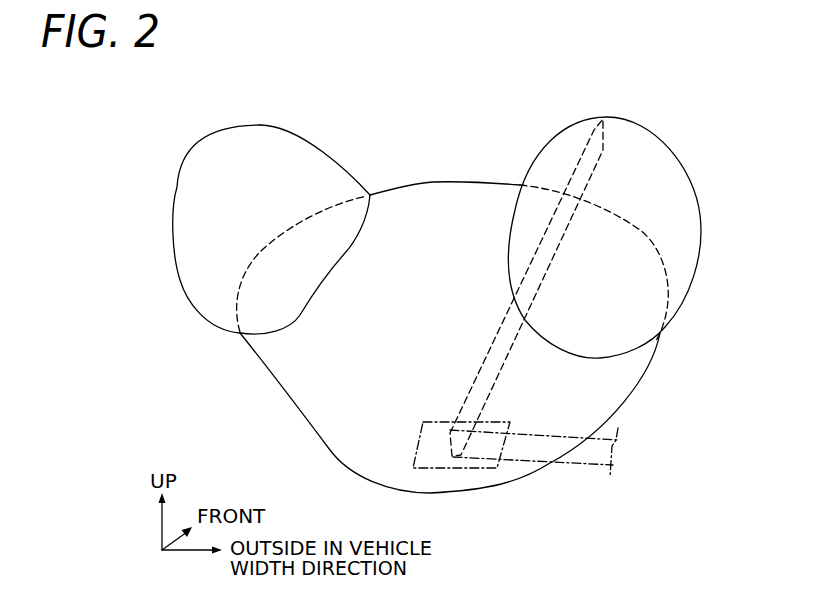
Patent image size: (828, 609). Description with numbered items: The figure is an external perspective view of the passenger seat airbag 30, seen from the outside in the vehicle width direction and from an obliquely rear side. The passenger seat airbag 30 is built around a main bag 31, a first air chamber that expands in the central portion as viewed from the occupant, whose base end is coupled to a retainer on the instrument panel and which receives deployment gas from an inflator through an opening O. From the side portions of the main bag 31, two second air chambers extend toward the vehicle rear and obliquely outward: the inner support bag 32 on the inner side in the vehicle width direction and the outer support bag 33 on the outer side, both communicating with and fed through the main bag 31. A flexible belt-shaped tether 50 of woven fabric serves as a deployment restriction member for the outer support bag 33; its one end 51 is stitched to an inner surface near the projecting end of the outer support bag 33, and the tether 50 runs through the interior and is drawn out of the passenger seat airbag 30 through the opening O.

The passenger seat airbag 30 is at (402, 311).
The main bag 31 is at (430, 182).
The inner support bag 32 is at (228, 126).
The outer support bag 33 is at (653, 130).
The tether 50 is at (508, 352).
The one end of the tether 51 is at (594, 130).
The opening O is at (484, 483).